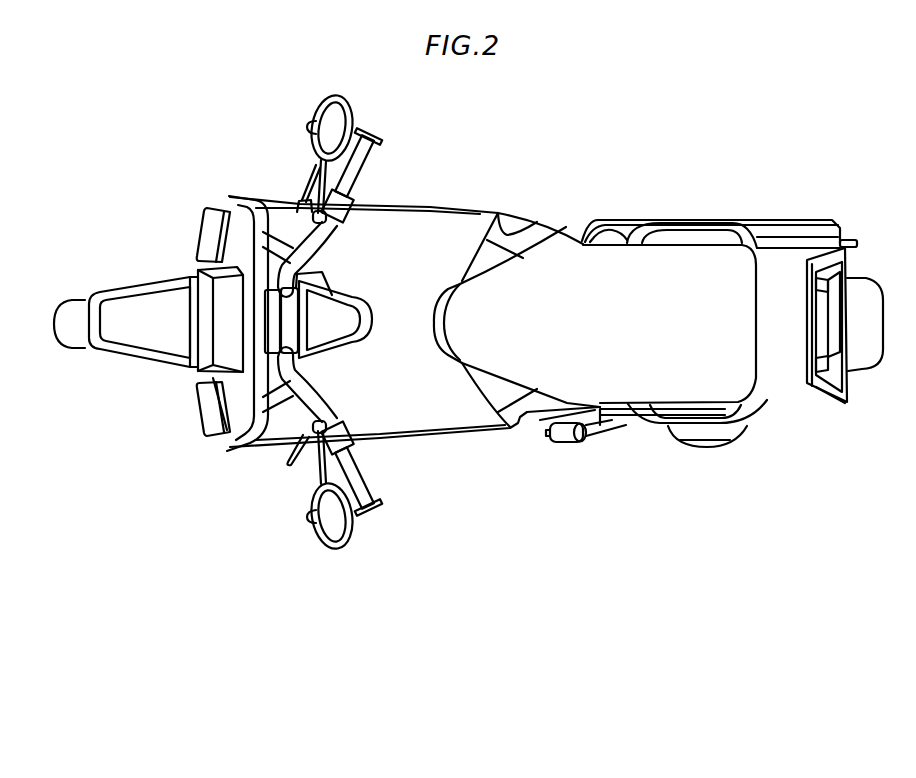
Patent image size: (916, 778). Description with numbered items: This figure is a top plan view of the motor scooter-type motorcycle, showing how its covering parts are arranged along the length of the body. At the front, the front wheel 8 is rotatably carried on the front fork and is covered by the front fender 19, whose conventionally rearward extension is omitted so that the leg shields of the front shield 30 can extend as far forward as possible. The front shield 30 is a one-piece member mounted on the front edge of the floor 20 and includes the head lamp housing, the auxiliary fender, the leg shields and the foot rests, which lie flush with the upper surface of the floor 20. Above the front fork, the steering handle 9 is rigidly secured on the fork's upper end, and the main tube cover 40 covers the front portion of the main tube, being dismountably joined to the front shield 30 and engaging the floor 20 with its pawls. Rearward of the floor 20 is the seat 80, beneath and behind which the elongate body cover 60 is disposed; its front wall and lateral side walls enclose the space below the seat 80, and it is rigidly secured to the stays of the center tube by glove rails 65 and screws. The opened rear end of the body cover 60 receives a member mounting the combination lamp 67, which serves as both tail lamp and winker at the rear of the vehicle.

The front wheel 8 is at (67, 333).
The front fender 19 is at (132, 307).
The front shield 30 is at (230, 433).
The steering handle 9 is at (327, 411).
The main tube cover 40 is at (325, 284).
The floor 20 is at (463, 412).
The seat 80 is at (555, 380).
The body cover 60 is at (783, 388).
The combination lamp 67 is at (857, 360).
The glove rail 65 is at (658, 430).